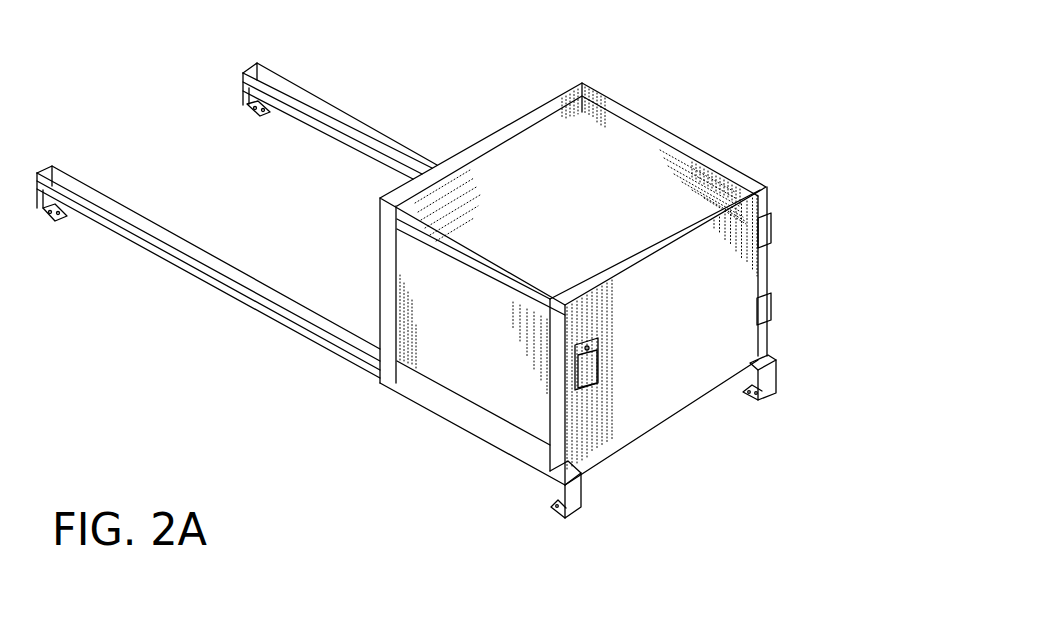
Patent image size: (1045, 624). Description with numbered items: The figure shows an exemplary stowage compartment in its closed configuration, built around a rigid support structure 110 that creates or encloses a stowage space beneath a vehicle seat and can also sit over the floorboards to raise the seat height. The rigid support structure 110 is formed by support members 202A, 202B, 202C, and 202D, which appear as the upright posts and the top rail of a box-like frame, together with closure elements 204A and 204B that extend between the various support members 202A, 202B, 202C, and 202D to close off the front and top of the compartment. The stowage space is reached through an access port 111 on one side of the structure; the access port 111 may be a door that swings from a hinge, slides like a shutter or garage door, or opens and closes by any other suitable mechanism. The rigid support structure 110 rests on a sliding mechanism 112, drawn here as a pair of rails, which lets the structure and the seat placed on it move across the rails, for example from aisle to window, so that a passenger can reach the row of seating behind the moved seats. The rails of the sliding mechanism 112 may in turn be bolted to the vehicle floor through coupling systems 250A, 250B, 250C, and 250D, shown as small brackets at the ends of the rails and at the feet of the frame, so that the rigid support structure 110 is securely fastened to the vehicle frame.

The rigid support structure 110 is at (781, 68).
The access port 111 is at (652, 395).
The sliding mechanism 112 is at (268, 317).
The support member 202A is at (565, 417).
The support member 202B is at (394, 272).
The support member 202C is at (603, 96).
The support member 202D is at (770, 270).
The closure element 204A is at (467, 380).
The closure element 204B is at (632, 177).
The coupling system 250A is at (580, 505).
The coupling system 250B is at (776, 396).
The coupling system 250C is at (62, 221).
The coupling system 250D is at (243, 107).